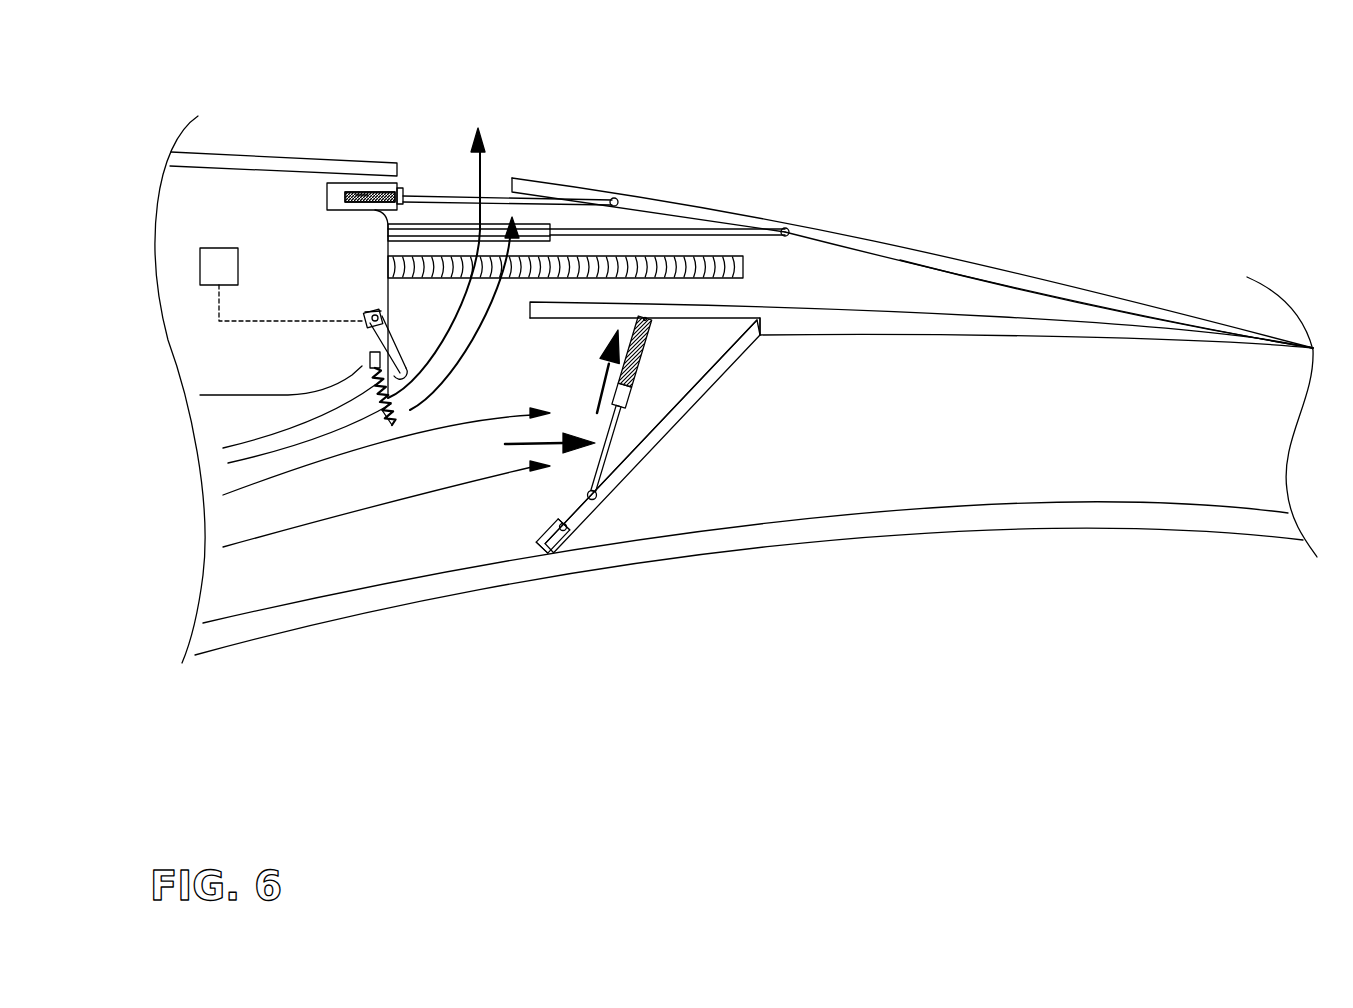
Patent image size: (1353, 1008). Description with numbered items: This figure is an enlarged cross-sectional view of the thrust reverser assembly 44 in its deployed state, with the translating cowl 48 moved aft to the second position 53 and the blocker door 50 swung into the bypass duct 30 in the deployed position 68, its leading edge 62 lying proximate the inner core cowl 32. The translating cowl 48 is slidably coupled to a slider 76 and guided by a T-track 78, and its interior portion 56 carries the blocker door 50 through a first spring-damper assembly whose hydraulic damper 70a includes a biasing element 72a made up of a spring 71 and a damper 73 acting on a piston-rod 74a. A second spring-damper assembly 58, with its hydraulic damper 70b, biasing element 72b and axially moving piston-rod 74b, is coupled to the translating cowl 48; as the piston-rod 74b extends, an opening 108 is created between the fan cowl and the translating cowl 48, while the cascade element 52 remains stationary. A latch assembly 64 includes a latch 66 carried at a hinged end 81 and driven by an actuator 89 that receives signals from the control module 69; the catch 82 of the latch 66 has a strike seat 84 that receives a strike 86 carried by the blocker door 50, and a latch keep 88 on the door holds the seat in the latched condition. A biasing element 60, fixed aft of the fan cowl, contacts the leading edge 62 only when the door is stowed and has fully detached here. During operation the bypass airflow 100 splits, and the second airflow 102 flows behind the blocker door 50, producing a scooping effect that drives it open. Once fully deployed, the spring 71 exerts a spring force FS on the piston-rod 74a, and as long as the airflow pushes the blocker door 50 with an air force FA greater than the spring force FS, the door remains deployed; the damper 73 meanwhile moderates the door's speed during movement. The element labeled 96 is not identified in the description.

The bypass duct 30 is at (1042, 420).
The inner core cowl 32 is at (1070, 515).
The thrust reverser assembly 44 is at (864, 77).
The translating cowl 48 is at (978, 273).
The blocker door 50 is at (630, 455).
The cascade element 52 is at (720, 262).
The second position 53 is at (892, 224).
The interior portion 56 is at (620, 310).
The second spring-damper assembly 58 is at (393, 141).
The biasing element 60 is at (373, 388).
The leading edge 62 is at (552, 552).
The latch assembly 64 is at (367, 393).
The latch 66 is at (367, 313).
The deployed position 68 is at (633, 472).
The control module 69 is at (219, 248).
The hydraulic damper 70a is at (625, 322).
The hydraulic damper 70b is at (362, 192).
The spring 71 is at (638, 366).
The biasing element 72a is at (645, 348).
The biasing element 72b is at (352, 195).
The damper 73 is at (630, 407).
The piston-rod 74a is at (598, 468).
The piston-rod 74b is at (438, 193).
The slider 76 is at (635, 225).
The T-track 78 is at (532, 226).
The hinged end 81 is at (379, 318).
The catch 82 is at (405, 373).
The strike seat 84 is at (405, 355).
The strike 86 is at (573, 523).
The latch keep 88 is at (557, 527).
The actuator 89 is at (367, 327).
The spring end 96 is at (398, 412).
The bypass airflow 100 is at (257, 538).
The second airflow 102 is at (676, 340).
The opening 108 is at (516, 138).
The air force FA is at (577, 440).
The spring force FS is at (600, 368).